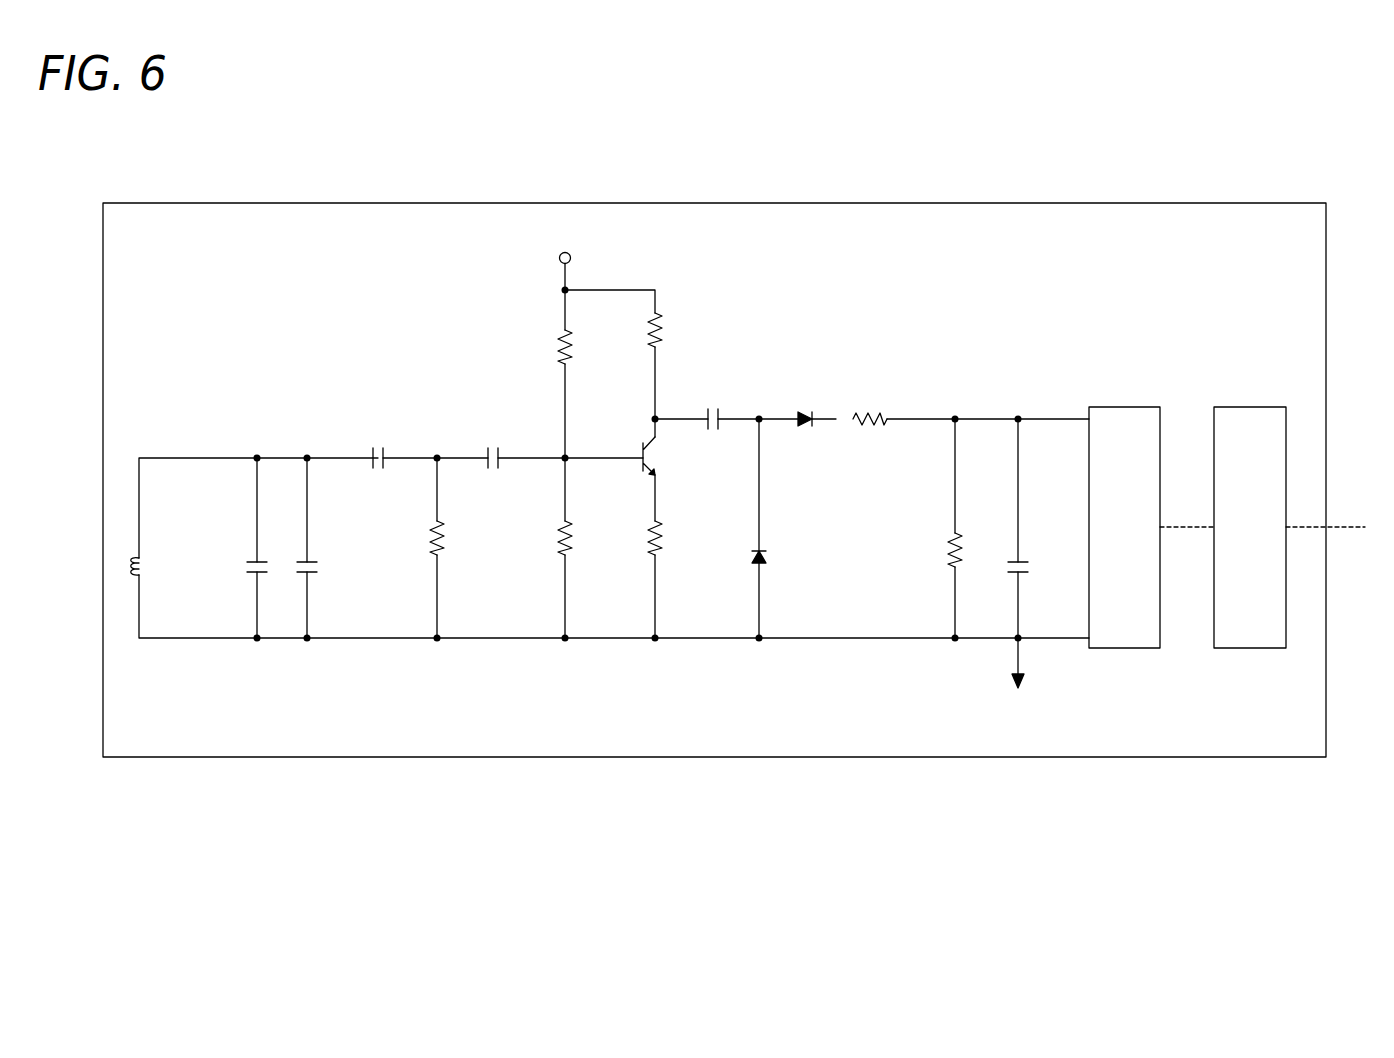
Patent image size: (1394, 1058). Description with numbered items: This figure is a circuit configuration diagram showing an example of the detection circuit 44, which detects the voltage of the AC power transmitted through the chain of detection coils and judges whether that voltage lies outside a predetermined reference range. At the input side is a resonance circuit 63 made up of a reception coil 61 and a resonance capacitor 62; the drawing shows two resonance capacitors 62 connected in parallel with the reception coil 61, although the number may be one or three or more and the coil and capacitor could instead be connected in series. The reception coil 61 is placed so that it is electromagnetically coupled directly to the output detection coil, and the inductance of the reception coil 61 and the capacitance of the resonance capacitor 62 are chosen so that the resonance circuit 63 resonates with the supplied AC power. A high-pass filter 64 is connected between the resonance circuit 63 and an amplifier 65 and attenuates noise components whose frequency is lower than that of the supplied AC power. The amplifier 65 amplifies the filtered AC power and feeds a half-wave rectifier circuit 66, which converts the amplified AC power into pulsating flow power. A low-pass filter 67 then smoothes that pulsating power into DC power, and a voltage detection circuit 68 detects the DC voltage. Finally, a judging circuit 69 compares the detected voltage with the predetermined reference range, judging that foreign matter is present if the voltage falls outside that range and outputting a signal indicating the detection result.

The detection circuit 44 is at (1236, 815).
The reception coil 61 is at (146, 566).
The resonance capacitor 62 is at (250, 558).
The resonance circuit 63 is at (328, 687).
The high-pass filter 64 is at (452, 687).
The amplifier 65 is at (737, 687).
The half-wave rectifier circuit 66 is at (832, 687).
The low-pass filter 67 is at (1042, 687).
The voltage detection circuit 68 is at (1122, 648).
The judging circuit 69 is at (1250, 648).